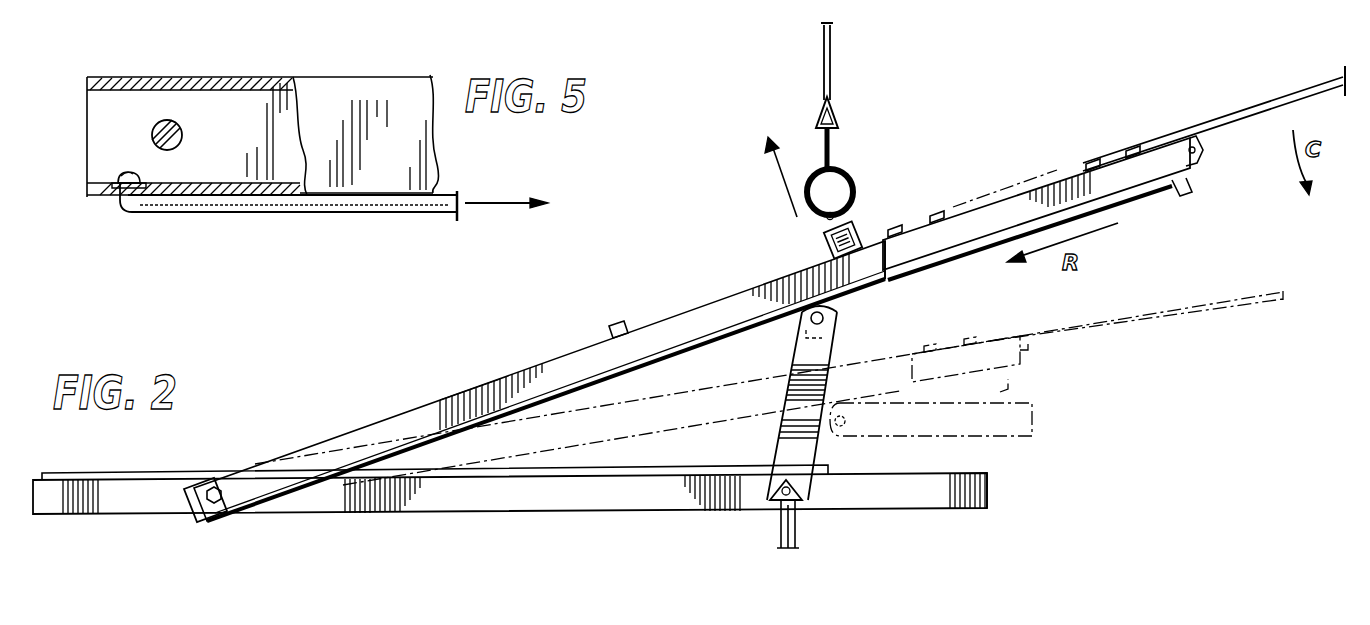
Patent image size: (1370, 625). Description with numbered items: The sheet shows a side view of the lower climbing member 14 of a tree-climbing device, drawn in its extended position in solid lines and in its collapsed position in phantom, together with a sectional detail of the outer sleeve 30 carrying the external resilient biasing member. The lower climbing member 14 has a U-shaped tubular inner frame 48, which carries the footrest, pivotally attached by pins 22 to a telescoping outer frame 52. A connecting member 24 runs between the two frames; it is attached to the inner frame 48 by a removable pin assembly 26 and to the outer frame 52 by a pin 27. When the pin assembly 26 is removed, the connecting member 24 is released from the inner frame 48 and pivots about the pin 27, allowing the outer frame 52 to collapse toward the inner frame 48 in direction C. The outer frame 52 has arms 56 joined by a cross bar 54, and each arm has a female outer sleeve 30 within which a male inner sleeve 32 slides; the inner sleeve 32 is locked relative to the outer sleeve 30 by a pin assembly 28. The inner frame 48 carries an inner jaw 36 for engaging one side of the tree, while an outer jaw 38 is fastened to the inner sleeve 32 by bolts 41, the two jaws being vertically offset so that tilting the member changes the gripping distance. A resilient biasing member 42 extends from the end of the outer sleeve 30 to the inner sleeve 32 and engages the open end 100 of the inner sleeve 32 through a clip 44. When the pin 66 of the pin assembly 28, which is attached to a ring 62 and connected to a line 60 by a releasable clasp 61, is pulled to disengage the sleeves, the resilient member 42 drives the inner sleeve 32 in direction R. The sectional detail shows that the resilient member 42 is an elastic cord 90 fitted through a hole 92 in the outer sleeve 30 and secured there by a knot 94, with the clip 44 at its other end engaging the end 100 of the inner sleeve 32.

In FIG. 2, the lower climbing member 14 is at (413, 353).
In FIG. 5, the pins 22 is at (182, 138).
In FIG. 2, the pins 22 is at (212, 480).
In FIG. 2, the connecting member 24 is at (798, 368).
In FIG. 2, the pin assembly 26 is at (797, 505).
In FIG. 2, the pin 27 is at (832, 322).
In FIG. 2, the pin assembly 28 is at (866, 234).
In FIG. 5, the outer sleeve 30 is at (282, 77).
In FIG. 2, the outer sleeve 30 is at (688, 308).
In FIG. 2, the inner sleeve 32 is at (992, 214).
In FIG. 2, the inner jaw 36 is at (990, 490).
In FIG. 2, the outer jaw 38 is at (1256, 110).
In FIG. 2, the bolts 41 is at (1133, 143).
In FIG. 2, the resilient biasing member 42 is at (1152, 194).
In FIG. 2, the clip 44 is at (1196, 180).
In FIG. 2, the inner frame 48 is at (528, 492).
In FIG. 2, the outer frame 52 is at (374, 387).
In FIG. 2, the cross bar 54 is at (619, 320).
In FIG. 2, the arms 56 is at (516, 370).
In FIG. 2, the line 60 is at (832, 62).
In FIG. 2, the releasable clasp 61 is at (834, 142).
In FIG. 2, the ring 62 is at (850, 182).
In FIG. 2, the pin 66 is at (820, 226).
In FIG. 5, the elastic cord 90 is at (358, 212).
In FIG. 5, the hole 92 is at (148, 183).
In FIG. 5, the knot 94 is at (126, 171).
In FIG. 2, the end of inner sleeve 100 is at (1203, 150).